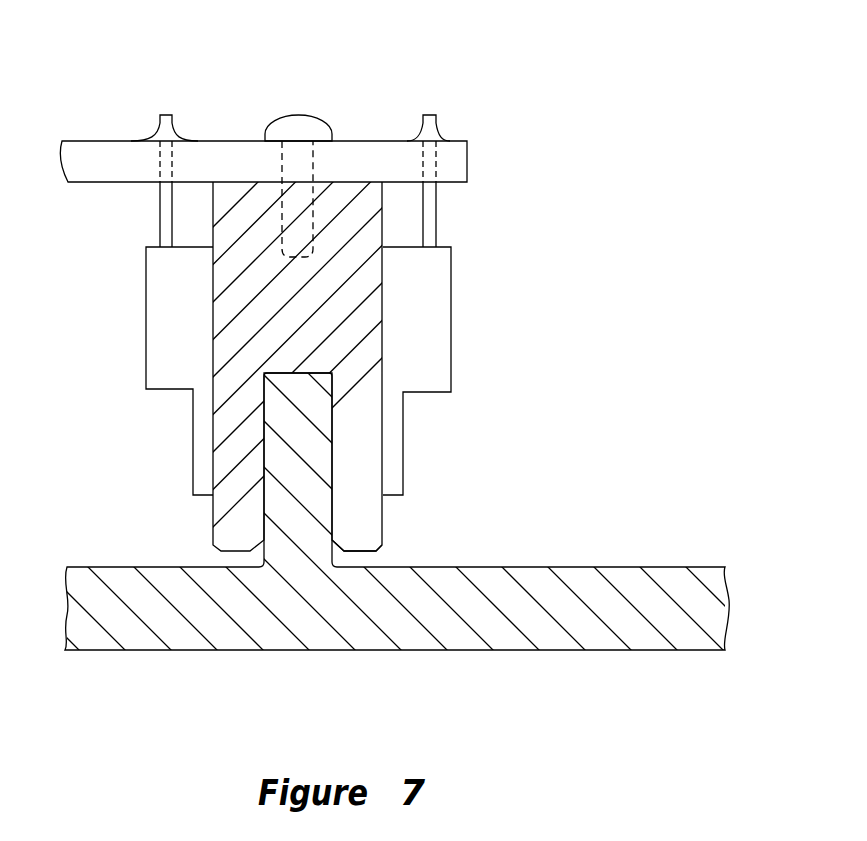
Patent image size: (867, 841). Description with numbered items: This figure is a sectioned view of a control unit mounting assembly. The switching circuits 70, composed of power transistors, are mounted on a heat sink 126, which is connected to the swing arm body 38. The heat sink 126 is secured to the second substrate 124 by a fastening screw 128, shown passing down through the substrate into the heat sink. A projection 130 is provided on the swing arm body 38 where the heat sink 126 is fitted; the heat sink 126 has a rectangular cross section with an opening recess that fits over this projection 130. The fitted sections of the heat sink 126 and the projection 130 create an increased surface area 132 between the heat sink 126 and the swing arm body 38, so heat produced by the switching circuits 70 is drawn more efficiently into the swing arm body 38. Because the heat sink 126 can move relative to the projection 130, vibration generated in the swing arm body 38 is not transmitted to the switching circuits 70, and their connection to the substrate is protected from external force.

The second substrate 124 is at (468, 162).
The fastening screw 128 is at (304, 115).
The switching circuits 70 is at (167, 308).
The heat sink 126 is at (352, 450).
The projection 130 is at (283, 420).
The surface area 132 is at (330, 494).
The swing arm body 38 is at (185, 648).